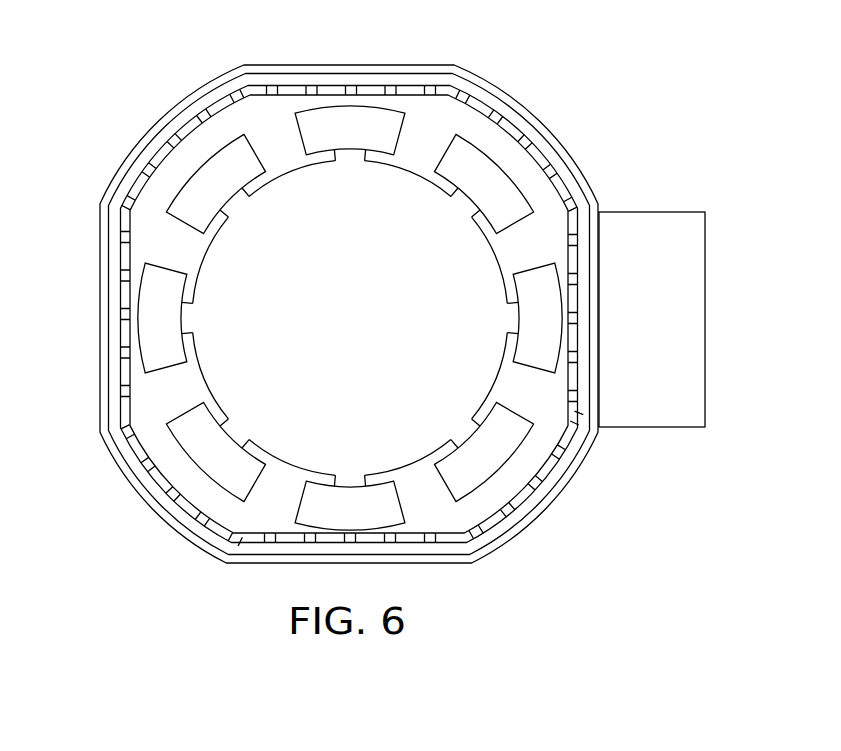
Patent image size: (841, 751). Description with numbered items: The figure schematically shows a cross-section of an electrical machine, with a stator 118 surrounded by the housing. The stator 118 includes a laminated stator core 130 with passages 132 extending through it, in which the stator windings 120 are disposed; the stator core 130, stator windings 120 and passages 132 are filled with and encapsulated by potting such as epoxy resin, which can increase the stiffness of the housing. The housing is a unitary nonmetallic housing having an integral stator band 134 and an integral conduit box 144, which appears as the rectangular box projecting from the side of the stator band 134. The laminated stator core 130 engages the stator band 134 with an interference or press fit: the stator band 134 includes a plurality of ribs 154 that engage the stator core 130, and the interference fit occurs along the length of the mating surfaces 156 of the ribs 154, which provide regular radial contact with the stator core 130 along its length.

The stator 118 is at (358, 384).
The stator windings 120 is at (358, 130).
The laminated stator core 130 is at (545, 205).
The passages 132 is at (401, 130).
The stator band 134 is at (545, 128).
The conduit box 144 is at (668, 212).
The ribs 154 is at (128, 425).
The mating surfaces 156 is at (244, 95).